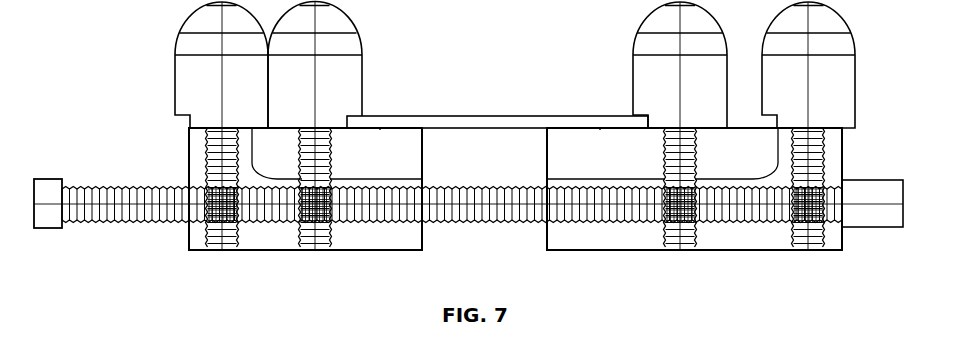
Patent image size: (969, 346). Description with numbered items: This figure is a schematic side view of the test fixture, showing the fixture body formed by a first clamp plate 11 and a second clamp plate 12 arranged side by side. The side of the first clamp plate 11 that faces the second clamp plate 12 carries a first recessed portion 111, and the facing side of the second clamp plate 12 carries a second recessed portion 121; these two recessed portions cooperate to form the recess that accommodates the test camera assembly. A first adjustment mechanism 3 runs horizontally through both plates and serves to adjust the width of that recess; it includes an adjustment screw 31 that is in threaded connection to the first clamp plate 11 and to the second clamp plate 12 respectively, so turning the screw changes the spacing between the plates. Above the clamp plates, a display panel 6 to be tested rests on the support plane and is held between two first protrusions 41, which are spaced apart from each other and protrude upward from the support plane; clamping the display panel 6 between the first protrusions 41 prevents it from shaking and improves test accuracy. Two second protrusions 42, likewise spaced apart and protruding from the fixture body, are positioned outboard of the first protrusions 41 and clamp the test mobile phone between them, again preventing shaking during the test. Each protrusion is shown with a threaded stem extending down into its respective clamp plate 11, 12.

The first adjustment mechanism 3 is at (476, 184).
The adjustment screw 31 is at (880, 190).
The display panel to be tested 6 is at (493, 123).
The first clamp plate 11 is at (397, 240).
The second clamp plate 12 is at (577, 240).
The first protrusions 41 is at (641, 61).
The second protrusions 42 is at (845, 80).
The first recessed portion 111 is at (392, 147).
The second recessed portion 121 is at (587, 150).